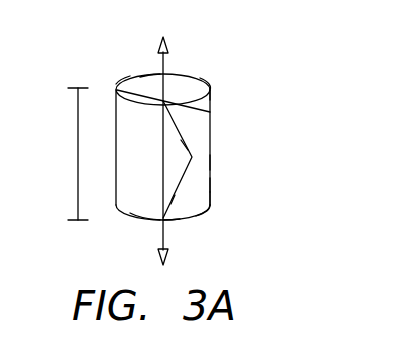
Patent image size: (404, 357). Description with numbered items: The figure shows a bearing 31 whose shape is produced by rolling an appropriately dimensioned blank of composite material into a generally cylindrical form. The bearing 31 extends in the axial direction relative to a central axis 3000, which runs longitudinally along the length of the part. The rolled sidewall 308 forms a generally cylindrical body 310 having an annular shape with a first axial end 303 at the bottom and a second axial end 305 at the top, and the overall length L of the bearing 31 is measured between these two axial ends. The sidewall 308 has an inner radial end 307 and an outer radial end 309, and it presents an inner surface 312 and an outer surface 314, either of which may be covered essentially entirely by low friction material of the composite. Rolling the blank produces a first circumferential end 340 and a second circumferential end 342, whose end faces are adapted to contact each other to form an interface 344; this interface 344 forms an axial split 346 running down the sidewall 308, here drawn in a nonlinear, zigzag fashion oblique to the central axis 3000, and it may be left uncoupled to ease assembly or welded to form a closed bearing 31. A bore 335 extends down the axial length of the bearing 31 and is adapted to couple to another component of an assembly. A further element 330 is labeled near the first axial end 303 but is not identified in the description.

The bearing 31 is at (292, 61).
The central axis 3000 is at (167, 52).
The second axial end 305 is at (208, 88).
The outer radial end 309 is at (210, 92).
The inner radial end 307 is at (210, 112).
The axial split 346 is at (181, 140).
The outer surface 314 is at (210, 162).
The generally cylindrical body 310 is at (211, 185).
The sidewall 308 is at (210, 198).
The first axial end 303 is at (210, 207).
The second circumferential end 342 is at (172, 200).
The interface 344 is at (175, 220).
The bottom surface 330 is at (147, 220).
The first circumferential end 340 is at (181, 140).
The bore 335 is at (117, 82).
The inner surface 312 is at (147, 83).
The overall length L is at (77, 157).